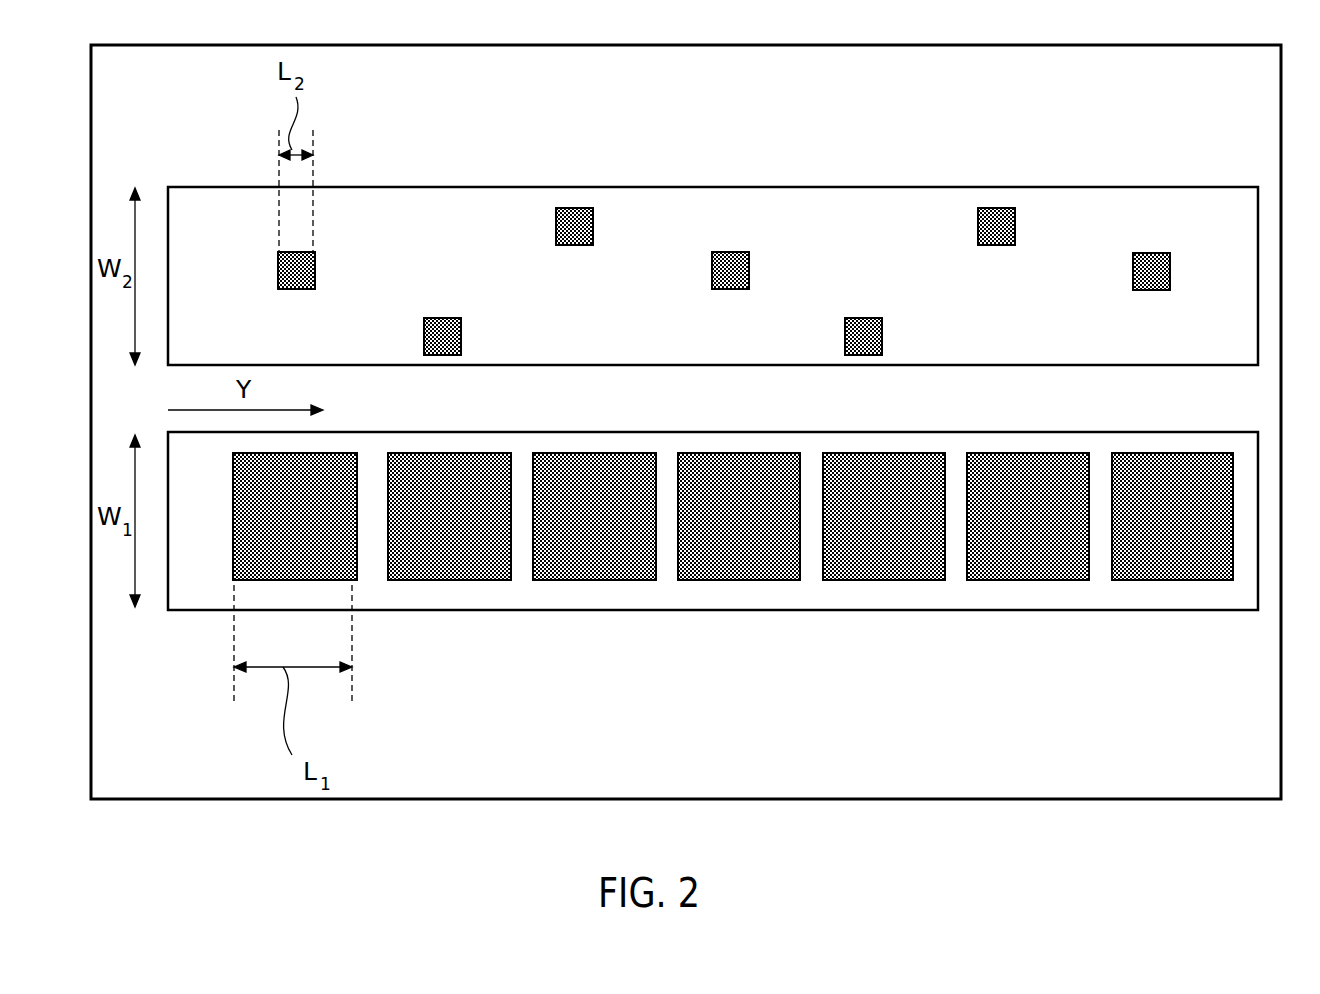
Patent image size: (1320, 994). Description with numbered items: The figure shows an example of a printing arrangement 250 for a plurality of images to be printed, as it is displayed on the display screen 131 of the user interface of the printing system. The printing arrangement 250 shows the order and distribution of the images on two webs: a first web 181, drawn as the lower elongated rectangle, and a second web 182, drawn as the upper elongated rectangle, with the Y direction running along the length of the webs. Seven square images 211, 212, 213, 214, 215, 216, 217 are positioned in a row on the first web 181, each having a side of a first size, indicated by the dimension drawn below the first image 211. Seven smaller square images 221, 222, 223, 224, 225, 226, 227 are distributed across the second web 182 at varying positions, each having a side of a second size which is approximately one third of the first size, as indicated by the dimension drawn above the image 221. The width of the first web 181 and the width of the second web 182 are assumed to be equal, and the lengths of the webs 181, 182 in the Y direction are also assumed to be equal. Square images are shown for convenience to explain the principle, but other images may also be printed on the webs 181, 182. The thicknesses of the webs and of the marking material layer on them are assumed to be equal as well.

The display screen 131 is at (195, 800).
The first web 181 is at (545, 612).
The second web 182 is at (441, 187).
The image 211 is at (240, 514).
The image 212 is at (447, 560).
The image 213 is at (600, 560).
The image 214 is at (750, 560).
The image 215 is at (890, 560).
The image 216 is at (1035, 560).
The image 217 is at (1178, 560).
The image 221 is at (278, 270).
The image 222 is at (442, 318).
The image 223 is at (575, 208).
The image 224 is at (722, 252).
The image 225 is at (860, 318).
The image 226 is at (988, 208).
The image 227 is at (1152, 253).
The printing arrangement 250 is at (1168, 755).